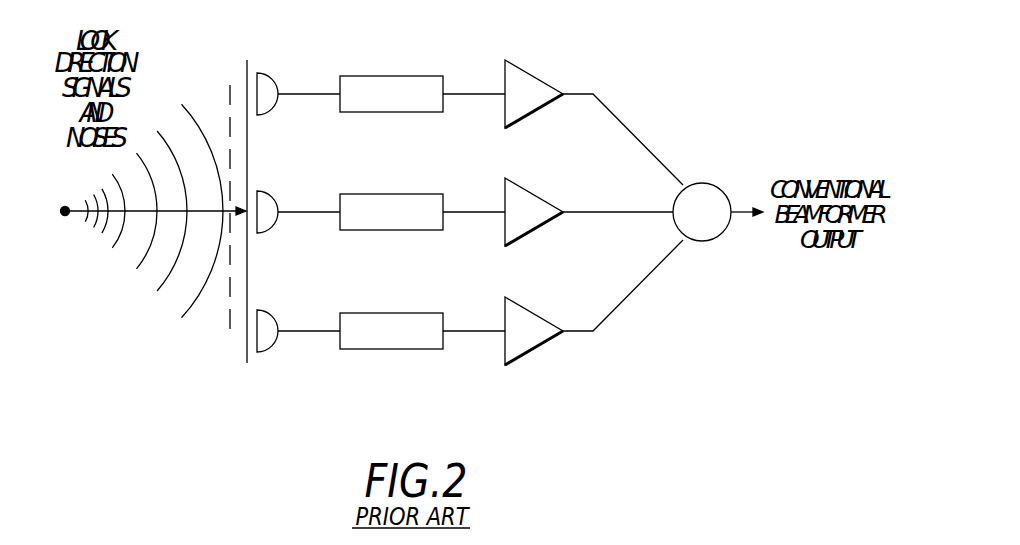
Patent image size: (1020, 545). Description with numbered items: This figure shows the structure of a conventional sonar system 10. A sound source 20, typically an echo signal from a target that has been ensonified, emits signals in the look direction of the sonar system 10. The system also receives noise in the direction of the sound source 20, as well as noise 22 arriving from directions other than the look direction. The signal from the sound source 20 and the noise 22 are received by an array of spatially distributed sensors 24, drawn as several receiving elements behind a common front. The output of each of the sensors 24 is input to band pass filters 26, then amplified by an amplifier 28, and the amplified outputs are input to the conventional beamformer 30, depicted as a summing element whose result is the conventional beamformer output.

The sonar system 10 is at (496, 182).
The sound source 20 is at (65, 216).
The noise 22 is at (164, 304).
The spatially distributed sensors 24 is at (268, 60).
The band pass filters 26 is at (374, 76).
The amplifier 28 is at (522, 70).
The conventional beamformer 30 is at (700, 243).